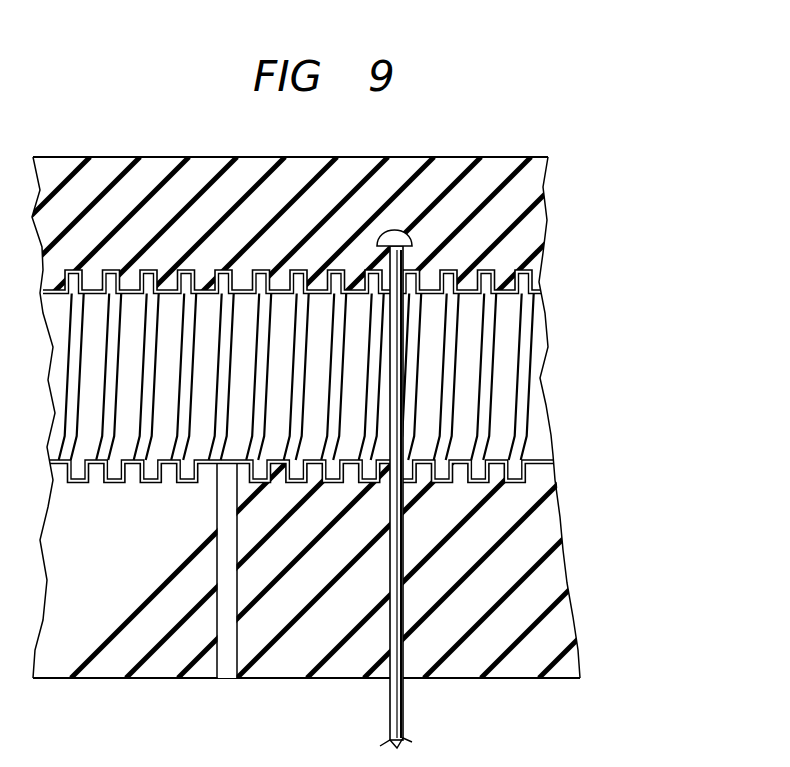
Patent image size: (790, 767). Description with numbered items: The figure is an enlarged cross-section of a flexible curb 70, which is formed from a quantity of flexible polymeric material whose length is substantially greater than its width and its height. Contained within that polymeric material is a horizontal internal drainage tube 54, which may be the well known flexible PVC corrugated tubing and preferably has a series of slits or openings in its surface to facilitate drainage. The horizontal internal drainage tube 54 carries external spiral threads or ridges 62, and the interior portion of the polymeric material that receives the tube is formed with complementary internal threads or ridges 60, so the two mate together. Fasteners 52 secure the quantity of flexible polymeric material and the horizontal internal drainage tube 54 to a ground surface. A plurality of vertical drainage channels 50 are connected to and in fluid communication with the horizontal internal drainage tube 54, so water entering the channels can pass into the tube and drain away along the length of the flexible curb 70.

The vertical drainage channels 50 is at (222, 617).
The fasteners 52 is at (403, 602).
The horizontal internal drainage tube 54 is at (477, 368).
The internal threads or ridges 60 is at (473, 278).
The external spiral threads or ridges 62 is at (100, 283).
The flexible curb 70 is at (519, 128).